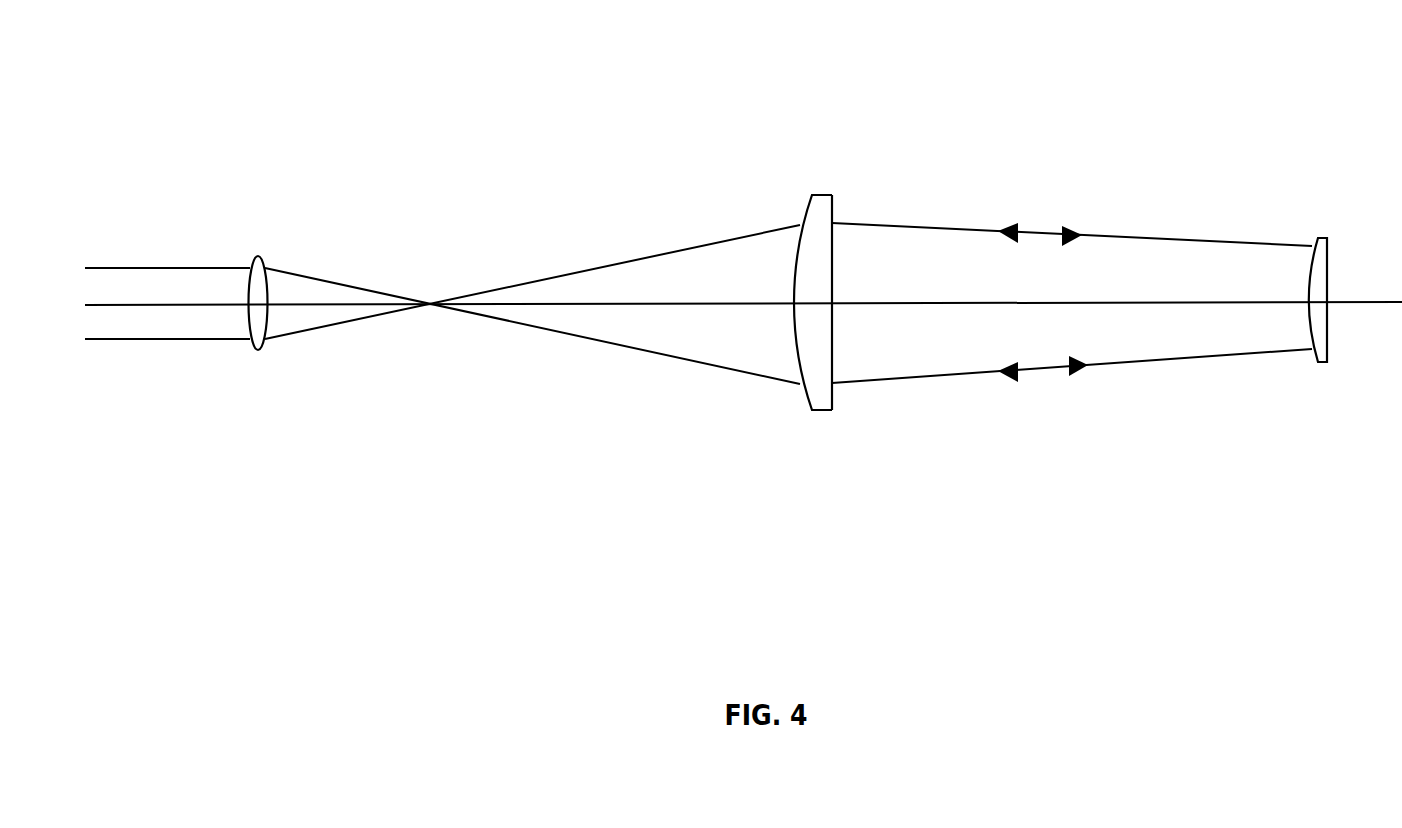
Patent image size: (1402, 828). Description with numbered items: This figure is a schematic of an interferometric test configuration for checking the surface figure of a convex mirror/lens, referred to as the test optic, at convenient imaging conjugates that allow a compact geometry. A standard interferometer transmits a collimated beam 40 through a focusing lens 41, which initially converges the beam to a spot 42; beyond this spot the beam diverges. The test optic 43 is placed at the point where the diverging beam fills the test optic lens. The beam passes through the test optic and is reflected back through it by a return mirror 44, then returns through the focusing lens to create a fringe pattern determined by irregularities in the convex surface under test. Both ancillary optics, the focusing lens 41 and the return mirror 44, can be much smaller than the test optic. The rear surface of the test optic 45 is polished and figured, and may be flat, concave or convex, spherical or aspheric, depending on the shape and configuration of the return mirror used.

The collimated beam 40 is at (150, 268).
The focusing lens 41 is at (263, 346).
The spot 42 is at (435, 300).
The test optic 43 is at (801, 208).
The return mirror 44 is at (1311, 239).
The rear surface of the test optic 45 is at (836, 396).